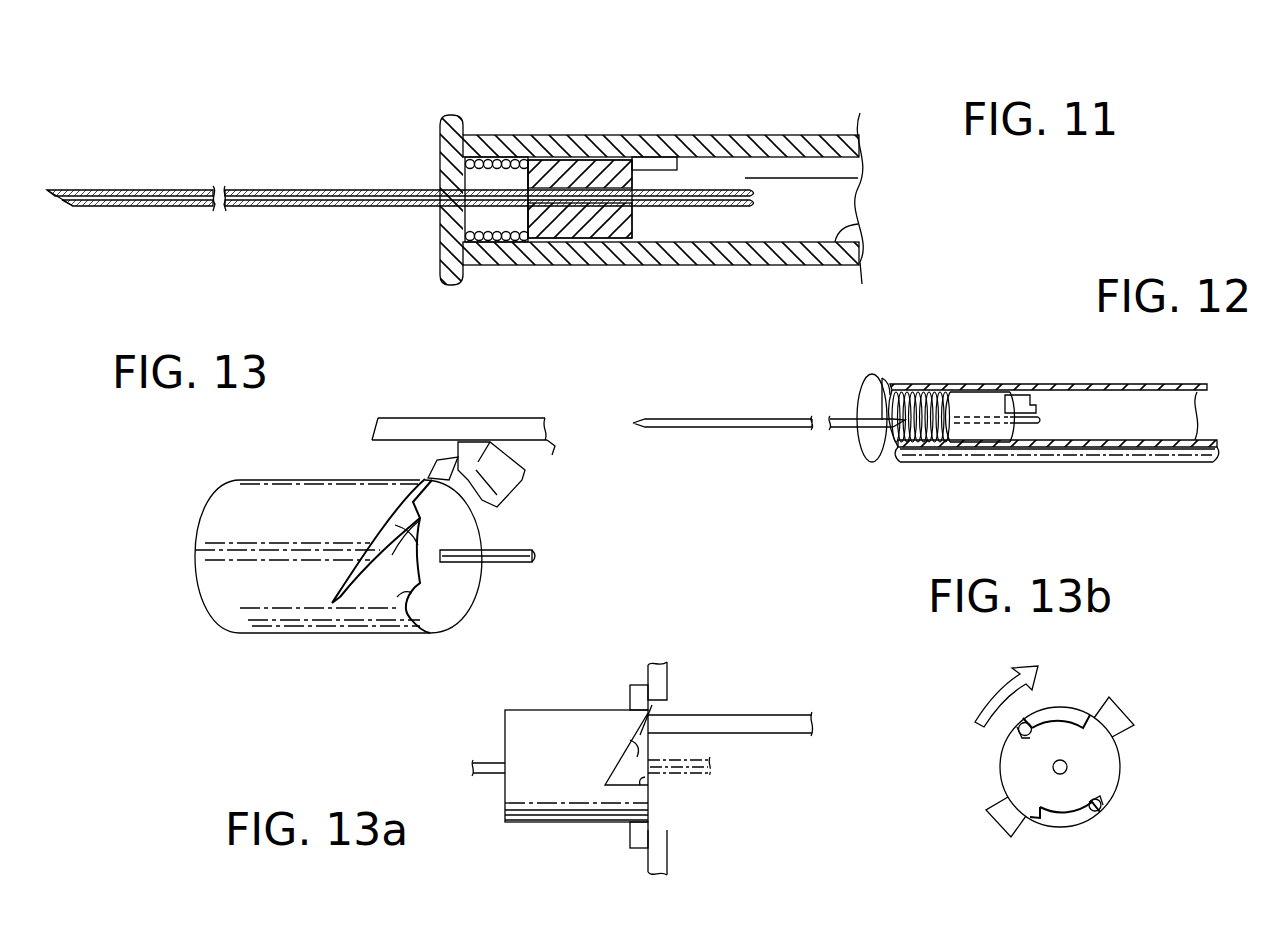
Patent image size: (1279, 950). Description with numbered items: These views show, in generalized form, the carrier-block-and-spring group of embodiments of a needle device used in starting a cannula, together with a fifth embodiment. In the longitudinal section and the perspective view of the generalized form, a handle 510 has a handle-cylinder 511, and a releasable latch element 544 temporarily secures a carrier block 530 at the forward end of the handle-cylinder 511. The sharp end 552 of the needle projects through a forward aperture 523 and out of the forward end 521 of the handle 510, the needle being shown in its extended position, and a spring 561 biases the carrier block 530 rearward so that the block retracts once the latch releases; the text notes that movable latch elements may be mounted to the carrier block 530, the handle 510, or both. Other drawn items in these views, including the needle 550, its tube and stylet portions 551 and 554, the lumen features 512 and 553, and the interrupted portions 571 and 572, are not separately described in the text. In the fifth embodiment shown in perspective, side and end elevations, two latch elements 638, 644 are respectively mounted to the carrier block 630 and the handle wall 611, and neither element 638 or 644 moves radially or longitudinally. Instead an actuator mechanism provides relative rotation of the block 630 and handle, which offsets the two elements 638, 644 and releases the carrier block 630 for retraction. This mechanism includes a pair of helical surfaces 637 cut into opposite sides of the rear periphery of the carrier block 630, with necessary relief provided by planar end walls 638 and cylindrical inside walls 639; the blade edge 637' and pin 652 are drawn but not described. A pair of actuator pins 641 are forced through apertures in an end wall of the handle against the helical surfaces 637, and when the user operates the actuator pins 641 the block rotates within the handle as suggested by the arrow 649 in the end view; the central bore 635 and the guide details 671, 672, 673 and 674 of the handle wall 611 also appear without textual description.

In FIG. 11, the handle 510 is at (840, 66).
In FIG. 12, the handle 510 is at (1057, 372).
In FIG. 11, the handle-cylinder 511 is at (768, 137).
In FIG. 12, the handle-cylinder 511 is at (1092, 384).
In FIG. 11, the lumen 512 is at (860, 228).
In FIG. 11, the forward end of the handle 521 is at (436, 262).
In FIG. 11, the forward aperture 523 is at (435, 185).
In FIG. 11, the carrier block 530 is at (572, 160).
In FIG. 12, the carrier block 530 is at (977, 433).
In FIG. 11, the releasable latch element 544 is at (656, 164).
In FIG. 12, the releasable latch element 544 is at (1020, 398).
In FIG. 12, the needle 550 is at (773, 402).
In FIG. 11, the cannula 551 is at (170, 210).
In FIG. 11, the sharp end of the needle 552 is at (64, 206).
In FIG. 11, the channel 553 is at (862, 178).
In FIG. 11, the stylet 554 is at (127, 196).
In FIG. 11, the spring 561 is at (498, 242).
In FIG. 11, the housing wall 571 is at (860, 120).
In FIG. 11, the needle section 572 is at (258, 133).
In FIG. 13, the handle wall 611 is at (464, 418).
In FIG. 13, the carrier block 630 is at (232, 527).
In FIG. 13A, the carrier block 630 is at (538, 777).
In FIG. 13B, the central bore 635 is at (1067, 767).
In FIG. 13, the helical surfaces 637 is at (356, 529).
In FIG. 13A, the helical surfaces 637 is at (568, 731).
In FIG. 13B, the helical surfaces 637 is at (1066, 769).
In FIG. 13, the blade edge 637' is at (460, 616).
In FIG. 13A, the blade edge 637' is at (686, 797).
In FIG. 13, the latch element / planar end wall 638 is at (440, 460).
In FIG. 13A, the latch element / planar end wall 638 is at (630, 688).
In FIG. 13B, the latch element / planar end wall 638 is at (1120, 712).
In FIG. 13, the cylindrical inside walls 639 is at (438, 535).
In FIG. 13A, the cylindrical inside walls 639 is at (625, 745).
In FIG. 13A, the actuator pins 641 is at (778, 718).
In FIG. 13B, the actuator pins 641 is at (1014, 738).
In FIG. 13, the latch element 644 is at (510, 480).
In FIG. 13A, the latch element 644 is at (667, 680).
In FIG. 13B, the arrow 649 is at (985, 688).
In FIG. 13, the axle pin 652 is at (508, 562).
In FIG. 13, the guide end 671 is at (555, 452).
In FIG. 13, the guide end 672 is at (382, 418).
In FIG. 13A, the arm 673 is at (814, 730).
In FIG. 13A, the follower end 674 is at (665, 665).